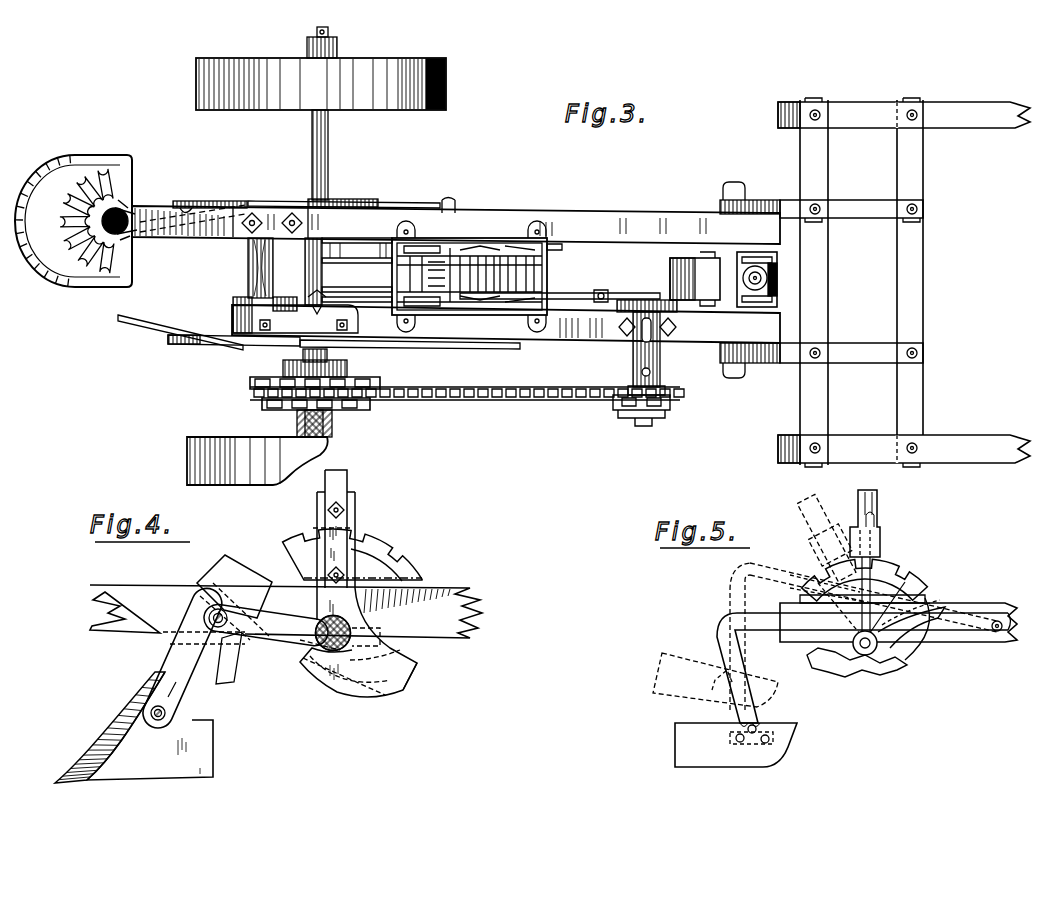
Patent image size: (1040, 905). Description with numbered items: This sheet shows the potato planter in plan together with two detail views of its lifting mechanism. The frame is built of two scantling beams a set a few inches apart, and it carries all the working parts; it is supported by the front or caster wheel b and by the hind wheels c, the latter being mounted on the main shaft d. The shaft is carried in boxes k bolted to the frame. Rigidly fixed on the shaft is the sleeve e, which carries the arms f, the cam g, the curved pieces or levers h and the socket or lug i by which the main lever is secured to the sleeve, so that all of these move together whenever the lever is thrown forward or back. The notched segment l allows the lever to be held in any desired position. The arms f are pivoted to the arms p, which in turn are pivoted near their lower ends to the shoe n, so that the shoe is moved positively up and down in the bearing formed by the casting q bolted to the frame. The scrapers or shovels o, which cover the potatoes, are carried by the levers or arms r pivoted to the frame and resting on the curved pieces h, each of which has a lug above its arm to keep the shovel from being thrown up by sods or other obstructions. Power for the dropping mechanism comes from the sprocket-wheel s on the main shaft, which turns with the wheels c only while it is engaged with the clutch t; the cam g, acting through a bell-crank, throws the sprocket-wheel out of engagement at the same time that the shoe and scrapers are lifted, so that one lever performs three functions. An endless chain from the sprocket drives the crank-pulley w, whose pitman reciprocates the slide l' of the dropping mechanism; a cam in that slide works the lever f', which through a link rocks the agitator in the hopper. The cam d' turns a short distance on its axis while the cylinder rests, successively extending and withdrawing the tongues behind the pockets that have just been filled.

In FIG. 3, the beam a is at (581, 282).
In FIG. 4, the beam a is at (286, 611).
In FIG. 5, the beam a is at (995, 606).
In FIG. 3, the front or caster wheel b is at (723, 279).
In FIG. 3, the hind wheels c is at (316, 256).
In FIG. 3, the main shaft d is at (343, 158).
In FIG. 4, the main shaft d is at (352, 627).
In FIG. 3, the sleeve e is at (305, 271).
In FIG. 3, the arms f is at (357, 270).
In FIG. 4, the arms f is at (275, 634).
In FIG. 3, the lever f' is at (565, 249).
In FIG. 3, the reciprocating slide l' is at (560, 289).
In FIG. 3, the cam d' is at (469, 279).
In FIG. 3, the crank-pulley w is at (680, 315).
In FIG. 3, the scrapers or shovels o is at (187, 212).
In FIG. 5, the scrapers or shovels o is at (725, 710).
In FIG. 3, the levers or arms r is at (432, 206).
In FIG. 5, the levers or arms r is at (864, 647).
In FIG. 3, the arms p is at (264, 344).
In FIG. 4, the arms p is at (174, 686).
In FIG. 3, the sprocket-wheel s is at (260, 405).
In FIG. 3, the clutch t is at (334, 430).
In FIG. 4, the socket or lug i is at (355, 506).
In FIG. 4, the segment l is at (353, 554).
In FIG. 5, the segment l is at (862, 572).
In FIG. 4, the cam g is at (180, 622).
In FIG. 4, the shoe n is at (134, 727).
In FIG. 4, the boxes k is at (318, 676).
In FIG. 4, the casting q is at (408, 679).
In FIG. 5, the curved pieces or levers h is at (918, 650).